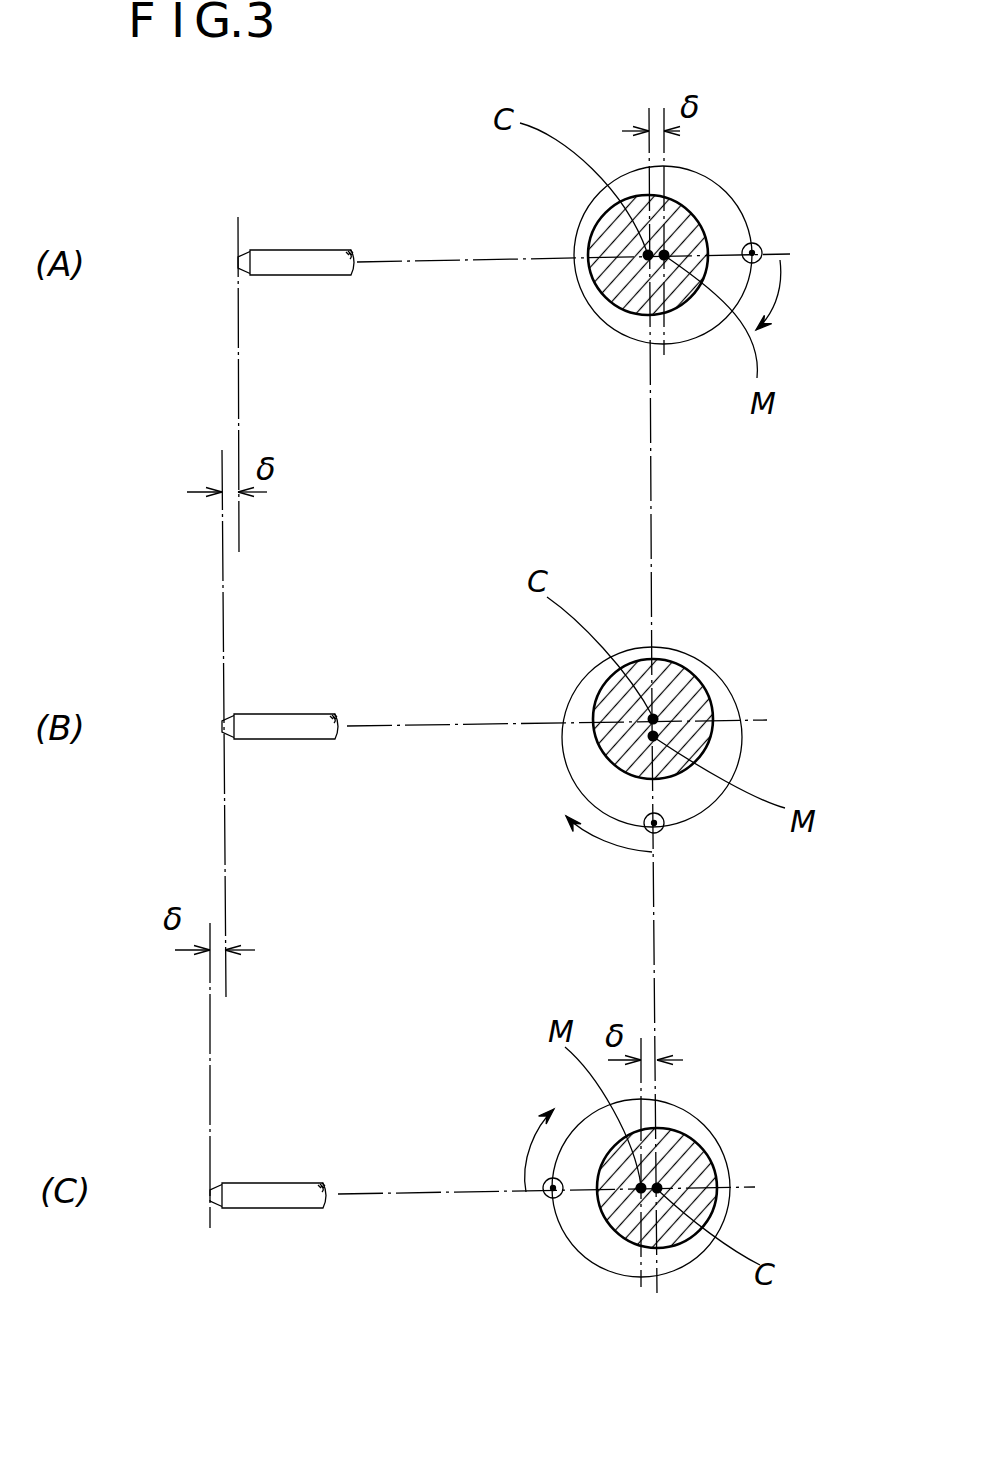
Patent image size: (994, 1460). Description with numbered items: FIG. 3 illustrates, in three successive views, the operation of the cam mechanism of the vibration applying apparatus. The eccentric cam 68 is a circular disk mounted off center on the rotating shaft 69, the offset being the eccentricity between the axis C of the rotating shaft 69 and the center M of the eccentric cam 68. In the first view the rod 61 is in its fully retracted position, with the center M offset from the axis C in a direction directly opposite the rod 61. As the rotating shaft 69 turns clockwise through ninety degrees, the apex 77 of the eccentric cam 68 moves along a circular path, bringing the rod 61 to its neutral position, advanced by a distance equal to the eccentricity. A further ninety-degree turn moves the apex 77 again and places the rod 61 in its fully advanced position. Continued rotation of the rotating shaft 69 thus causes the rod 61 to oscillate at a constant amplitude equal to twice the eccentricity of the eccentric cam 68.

The rod 61 is at (304, 250).
The eccentric cam 68 is at (729, 196).
The rotating shaft 69 is at (590, 228).
The apex of the eccentric cam 77 is at (760, 241).